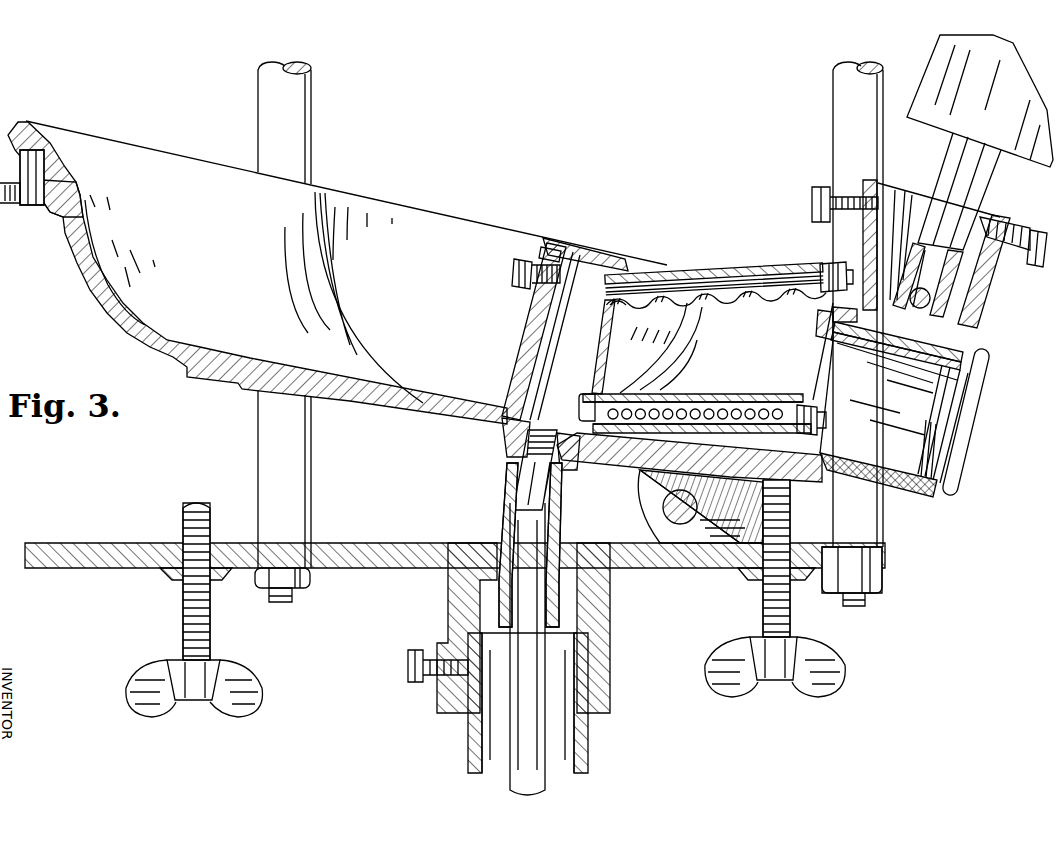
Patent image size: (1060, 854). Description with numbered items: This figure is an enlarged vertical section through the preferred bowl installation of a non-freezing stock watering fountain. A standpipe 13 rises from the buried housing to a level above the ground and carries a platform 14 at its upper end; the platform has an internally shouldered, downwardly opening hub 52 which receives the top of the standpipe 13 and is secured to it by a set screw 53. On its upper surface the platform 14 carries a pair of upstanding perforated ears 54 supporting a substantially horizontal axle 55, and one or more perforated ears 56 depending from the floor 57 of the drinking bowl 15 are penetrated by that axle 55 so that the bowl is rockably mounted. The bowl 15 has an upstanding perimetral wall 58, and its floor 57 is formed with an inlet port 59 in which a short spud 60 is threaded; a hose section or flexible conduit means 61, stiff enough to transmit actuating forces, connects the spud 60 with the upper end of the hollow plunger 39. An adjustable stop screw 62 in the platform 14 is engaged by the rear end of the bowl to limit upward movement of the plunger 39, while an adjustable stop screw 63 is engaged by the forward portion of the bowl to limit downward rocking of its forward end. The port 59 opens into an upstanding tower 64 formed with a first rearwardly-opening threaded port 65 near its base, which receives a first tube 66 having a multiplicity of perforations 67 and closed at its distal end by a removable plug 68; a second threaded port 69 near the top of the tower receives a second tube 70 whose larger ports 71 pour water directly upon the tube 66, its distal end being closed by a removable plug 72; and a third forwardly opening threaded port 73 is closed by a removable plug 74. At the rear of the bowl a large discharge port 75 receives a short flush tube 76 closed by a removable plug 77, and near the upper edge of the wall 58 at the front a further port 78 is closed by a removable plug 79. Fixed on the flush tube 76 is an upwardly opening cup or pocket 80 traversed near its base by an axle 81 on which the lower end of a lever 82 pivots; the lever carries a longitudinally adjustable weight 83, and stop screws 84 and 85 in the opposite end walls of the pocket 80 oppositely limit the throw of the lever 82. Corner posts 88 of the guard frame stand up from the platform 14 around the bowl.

The standpipe 13 is at (592, 746).
The platform 14 is at (373, 543).
The drinking bowl 15 is at (523, 198).
The hollow plunger 39 is at (512, 780).
The hub 52 is at (612, 614).
The set screw 53 is at (405, 662).
The perforated ears 54 is at (760, 545).
The axle 55 is at (683, 524).
The perforated ears 56 is at (642, 487).
The bowl floor 57 is at (425, 406).
The perimetral wall 58 is at (428, 210).
The inlet port 59 is at (549, 436).
The spud 60 is at (538, 489).
The flexible conduit means 61 is at (500, 518).
The adjustable stop screw 62 is at (765, 606).
The adjustable stop screw 63 is at (190, 618).
The tower 64 is at (516, 358).
The first threaded port 65 is at (585, 405).
The first tube 66 is at (712, 396).
The perforations 67 is at (733, 408).
The removable plug 68 is at (826, 410).
The second threaded port 69 is at (624, 302).
The second tube 70 is at (706, 268).
The ports 71 is at (746, 303).
The removable plug 72 is at (835, 268).
The third threaded port 73 is at (548, 248).
The removable plug 74 is at (520, 262).
The discharge port 75 is at (815, 455).
The flush tube 76 is at (892, 452).
The removable plug 77 is at (986, 368).
The port 78 is at (62, 182).
The removable plug 79 is at (35, 205).
The cup or pocket 80 is at (1000, 290).
The axle 81 is at (932, 292).
The lever 82 is at (953, 162).
The weight 83 is at (974, 89).
The stop screw 84 is at (1035, 267).
The stop screw 85 is at (818, 194).
The corner posts 88 is at (275, 100).